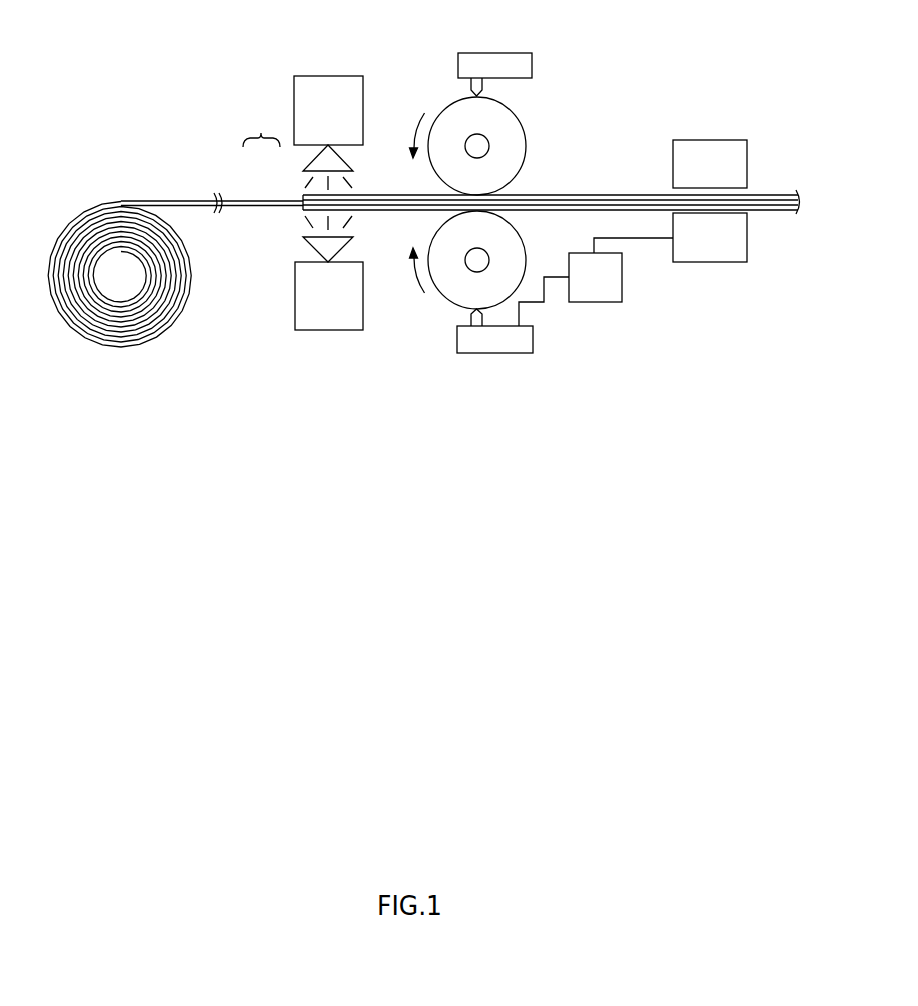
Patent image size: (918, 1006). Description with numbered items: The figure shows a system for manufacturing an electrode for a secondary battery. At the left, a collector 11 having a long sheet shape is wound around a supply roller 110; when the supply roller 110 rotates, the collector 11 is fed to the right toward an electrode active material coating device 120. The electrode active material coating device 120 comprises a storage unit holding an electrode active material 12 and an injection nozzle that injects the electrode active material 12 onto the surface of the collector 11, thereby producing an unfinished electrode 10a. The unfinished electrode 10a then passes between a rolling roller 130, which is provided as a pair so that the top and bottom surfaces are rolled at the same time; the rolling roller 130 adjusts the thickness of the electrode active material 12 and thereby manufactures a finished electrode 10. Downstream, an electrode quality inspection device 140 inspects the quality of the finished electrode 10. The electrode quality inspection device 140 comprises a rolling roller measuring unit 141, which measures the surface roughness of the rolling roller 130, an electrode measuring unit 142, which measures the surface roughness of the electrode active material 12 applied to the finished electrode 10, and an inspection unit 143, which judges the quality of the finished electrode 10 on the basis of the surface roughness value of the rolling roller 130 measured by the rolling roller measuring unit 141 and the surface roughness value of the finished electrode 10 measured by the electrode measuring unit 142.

The finished electrode 10 is at (460, 162).
The unfinished electrode 10a is at (261, 129).
The collector 11 is at (243, 200).
The electrode active material 12 is at (303, 196).
The supply roller 110 is at (120, 276).
The electrode active material coating device 120 is at (327, 76).
The rolling roller 130 is at (505, 253).
The electrode quality inspection device 140 is at (602, 316).
The rolling roller measuring unit 141 is at (495, 355).
The electrode measuring unit 142 is at (670, 267).
The inspection unit 143 is at (594, 304).